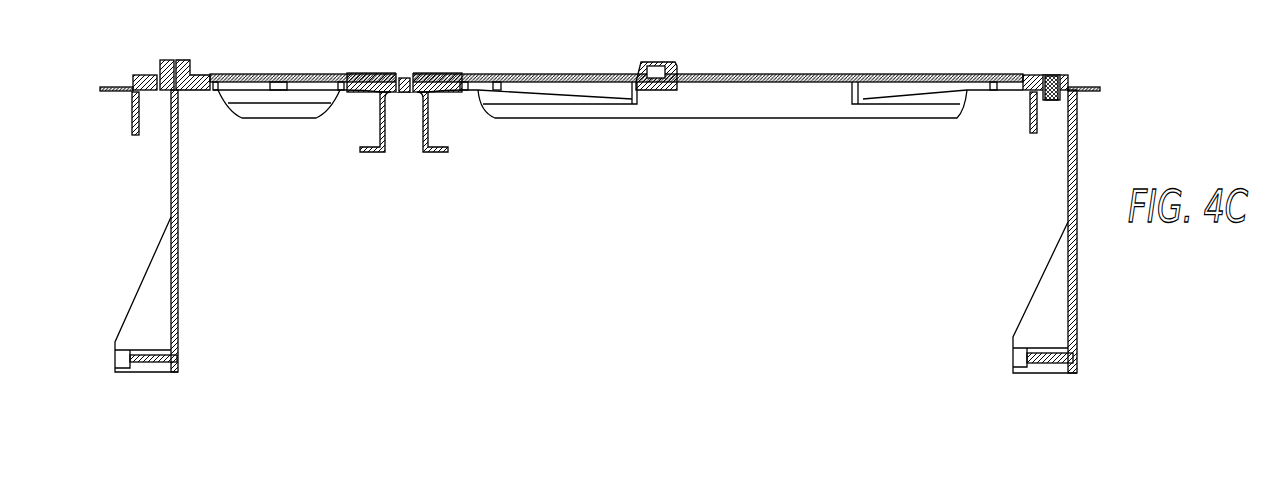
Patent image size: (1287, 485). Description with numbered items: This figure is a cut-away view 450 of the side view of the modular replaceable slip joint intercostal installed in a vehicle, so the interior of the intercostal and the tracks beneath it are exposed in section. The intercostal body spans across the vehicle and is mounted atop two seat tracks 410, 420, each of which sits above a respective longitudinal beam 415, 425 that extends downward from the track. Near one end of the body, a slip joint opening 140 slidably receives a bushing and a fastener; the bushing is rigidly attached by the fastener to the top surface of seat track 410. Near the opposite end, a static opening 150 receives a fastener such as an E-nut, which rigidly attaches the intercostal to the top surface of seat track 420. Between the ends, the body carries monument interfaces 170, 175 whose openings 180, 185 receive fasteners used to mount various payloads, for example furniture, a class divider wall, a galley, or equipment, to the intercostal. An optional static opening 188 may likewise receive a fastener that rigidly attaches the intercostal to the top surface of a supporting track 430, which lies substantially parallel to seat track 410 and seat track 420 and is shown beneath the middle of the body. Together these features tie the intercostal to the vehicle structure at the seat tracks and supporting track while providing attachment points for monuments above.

The slip joint opening 140 is at (1045, 74).
The static opening 150 is at (155, 77).
The monument interface 170 is at (668, 62).
The monument interface 175 is at (185, 60).
The opening of monument interface 180 is at (657, 64).
The opening of monument interface 185 is at (166, 60).
The optional static opening 188 is at (403, 73).
The seat track 410 is at (1082, 92).
The longitudinal beam 415 is at (1077, 168).
The seat track 420 is at (132, 115).
The longitudinal beam 425 is at (171, 215).
The supporting track 430 is at (365, 152).
The cut-away view 450 is at (1105, 277).